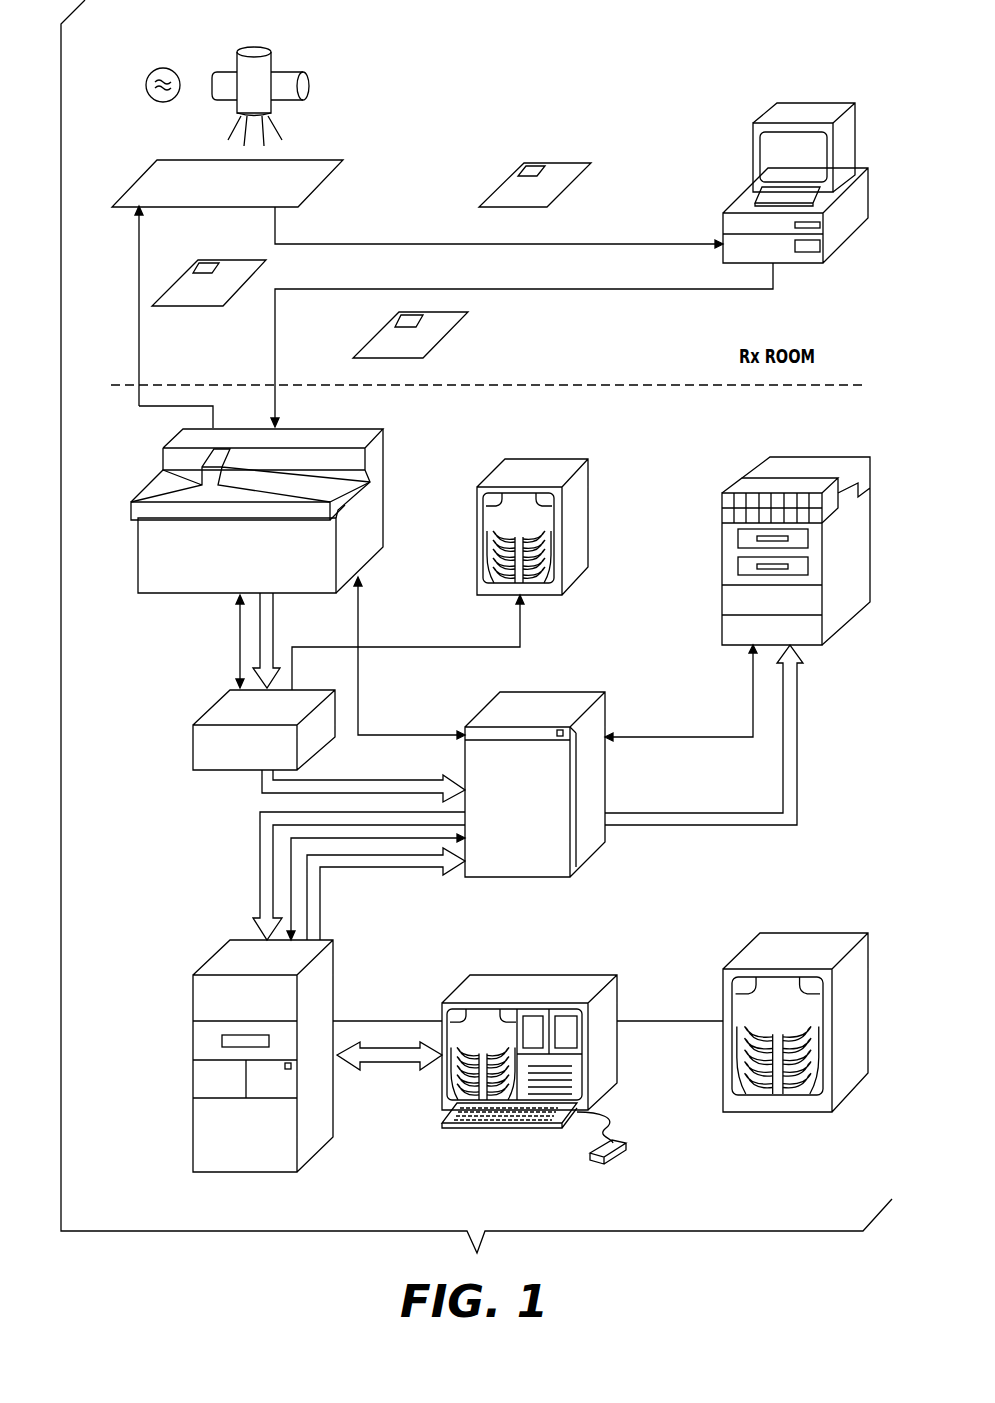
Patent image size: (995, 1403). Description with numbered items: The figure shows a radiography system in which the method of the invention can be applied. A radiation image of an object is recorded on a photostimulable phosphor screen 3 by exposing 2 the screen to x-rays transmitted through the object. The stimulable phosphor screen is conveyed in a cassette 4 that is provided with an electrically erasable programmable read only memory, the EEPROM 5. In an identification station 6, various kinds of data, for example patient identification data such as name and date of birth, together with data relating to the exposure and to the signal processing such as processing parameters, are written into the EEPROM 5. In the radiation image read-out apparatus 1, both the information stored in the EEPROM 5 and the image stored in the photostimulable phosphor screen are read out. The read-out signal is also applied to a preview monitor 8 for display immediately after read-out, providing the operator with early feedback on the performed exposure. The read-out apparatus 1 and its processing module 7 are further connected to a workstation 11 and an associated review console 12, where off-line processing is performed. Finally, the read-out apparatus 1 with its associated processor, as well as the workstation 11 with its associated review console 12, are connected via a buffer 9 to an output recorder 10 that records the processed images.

The radiation image read-out apparatus 1 is at (152, 535).
The exposing 2 is at (285, 76).
The photostimulable phosphor screen 3 is at (152, 185).
The cassette 4 is at (569, 168).
The electrically erasable programmable read only memory (EEPROM) 5 is at (535, 165).
The identification station 6 is at (752, 131).
The processing module 7 is at (203, 736).
The preview monitor 8 is at (580, 537).
The buffer 9 is at (583, 700).
The output recorder 10 is at (727, 570).
The workstation 11 is at (205, 988).
The review console 12 is at (595, 982).